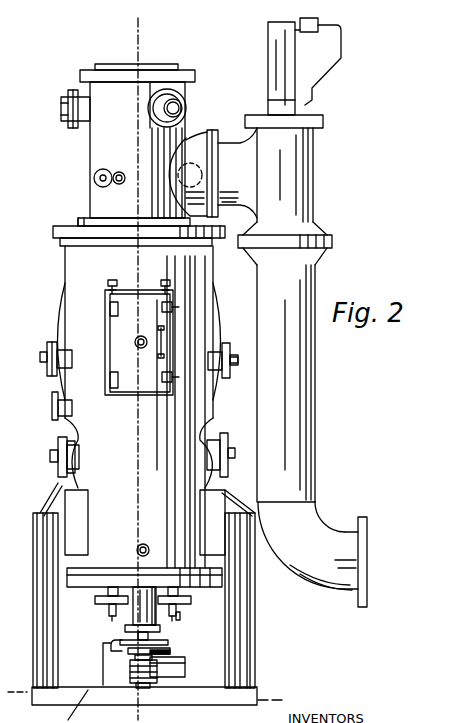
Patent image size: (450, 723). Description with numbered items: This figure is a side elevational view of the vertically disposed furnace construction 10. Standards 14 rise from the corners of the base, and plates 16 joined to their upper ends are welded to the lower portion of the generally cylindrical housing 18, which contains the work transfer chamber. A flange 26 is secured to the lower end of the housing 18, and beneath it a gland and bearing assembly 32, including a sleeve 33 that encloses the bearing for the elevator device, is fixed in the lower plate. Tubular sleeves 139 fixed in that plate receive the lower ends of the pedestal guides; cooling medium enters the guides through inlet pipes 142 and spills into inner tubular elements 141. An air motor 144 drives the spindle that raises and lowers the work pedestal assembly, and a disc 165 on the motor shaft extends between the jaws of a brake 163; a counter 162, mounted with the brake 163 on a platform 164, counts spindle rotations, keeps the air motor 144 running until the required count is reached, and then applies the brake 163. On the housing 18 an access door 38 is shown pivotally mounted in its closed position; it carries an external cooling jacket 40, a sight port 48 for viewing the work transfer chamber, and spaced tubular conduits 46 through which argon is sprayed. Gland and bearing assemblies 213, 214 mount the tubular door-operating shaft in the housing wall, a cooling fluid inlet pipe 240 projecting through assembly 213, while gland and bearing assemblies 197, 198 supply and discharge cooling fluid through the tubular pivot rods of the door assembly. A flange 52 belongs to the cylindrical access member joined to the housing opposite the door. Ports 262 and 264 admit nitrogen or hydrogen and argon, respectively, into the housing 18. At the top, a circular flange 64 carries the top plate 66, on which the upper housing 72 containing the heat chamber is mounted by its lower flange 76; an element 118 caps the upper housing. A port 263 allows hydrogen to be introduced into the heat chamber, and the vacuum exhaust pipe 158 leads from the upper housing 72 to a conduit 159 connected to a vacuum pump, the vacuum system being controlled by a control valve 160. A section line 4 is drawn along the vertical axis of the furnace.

The section line 4 is at (158, 718).
The top cap 118 is at (113, 65).
The control valve 160 is at (277, 42).
The port 263 is at (198, 140).
The vacuum exhaust pipe 158 is at (300, 176).
The conduit 159 is at (303, 420).
The lower flange 76 is at (82, 220).
The upper housing 72 is at (96, 221).
The top plate 66 is at (65, 232).
The circular flange 64 is at (58, 242).
The flange 52 is at (58, 312).
The housing 18 is at (72, 422).
The access door 38 is at (140, 398).
The external cooling jacket 40 is at (132, 300).
The tubular conduits 46 is at (108, 282).
The sight port 48 is at (136, 343).
The gland and bearing assembly 214 is at (49, 345).
The port 264 is at (55, 402).
The gland and bearing assembly 198 is at (60, 464).
The gland and bearing assembly 213 is at (236, 342).
The cooling fluid inlet pipe 240 is at (236, 366).
The gland and bearing assembly 197 is at (228, 446).
The plates 16 is at (50, 507).
The standards 14 is at (252, 645).
The furnace construction 10 is at (285, 609).
The port 262 is at (143, 540).
The flange 26 is at (104, 572).
The tubular sleeves 139 is at (96, 598).
The inlet pipes 142 is at (108, 615).
The inner tubular elements 141 is at (181, 618).
The sleeve 33 is at (135, 618).
The gland and bearing assembly 32 is at (160, 619).
The disc 165 is at (168, 644).
The counter 162 is at (185, 668).
The brake 163 is at (110, 642).
The platform 164 is at (128, 665).
The air motor 144 is at (158, 672).